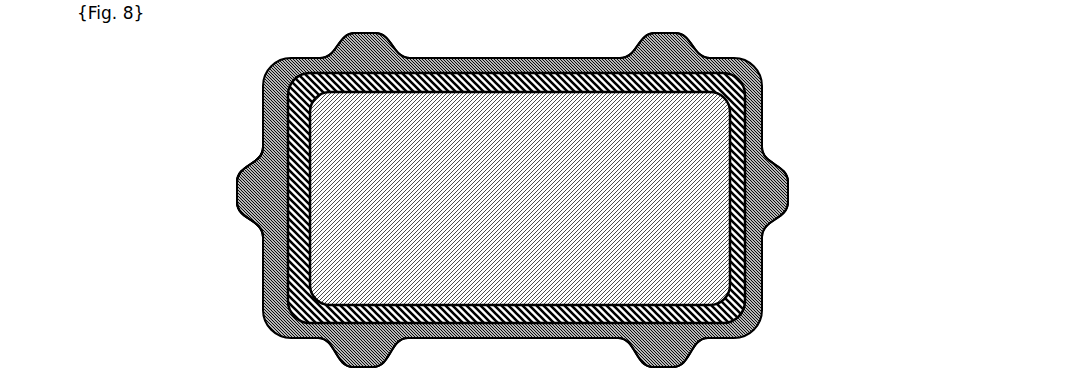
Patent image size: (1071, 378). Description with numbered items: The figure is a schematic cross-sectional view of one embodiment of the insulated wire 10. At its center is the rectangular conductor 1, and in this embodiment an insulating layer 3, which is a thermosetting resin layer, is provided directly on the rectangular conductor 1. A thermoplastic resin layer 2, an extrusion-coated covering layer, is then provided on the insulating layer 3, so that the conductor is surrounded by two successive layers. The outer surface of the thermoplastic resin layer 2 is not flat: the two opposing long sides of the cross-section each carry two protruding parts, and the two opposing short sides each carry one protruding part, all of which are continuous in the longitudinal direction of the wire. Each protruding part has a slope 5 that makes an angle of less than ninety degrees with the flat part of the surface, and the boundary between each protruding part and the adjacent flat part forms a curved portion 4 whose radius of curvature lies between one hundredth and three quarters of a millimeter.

The rectangular conductor 1 is at (648, 152).
The thermoplastic resin layer 2 is at (762, 238).
The insulating layer 3 is at (737, 285).
The curved portion 4 is at (318, 57).
The slope 5 is at (244, 216).
The insulated wire 10 is at (531, 199).